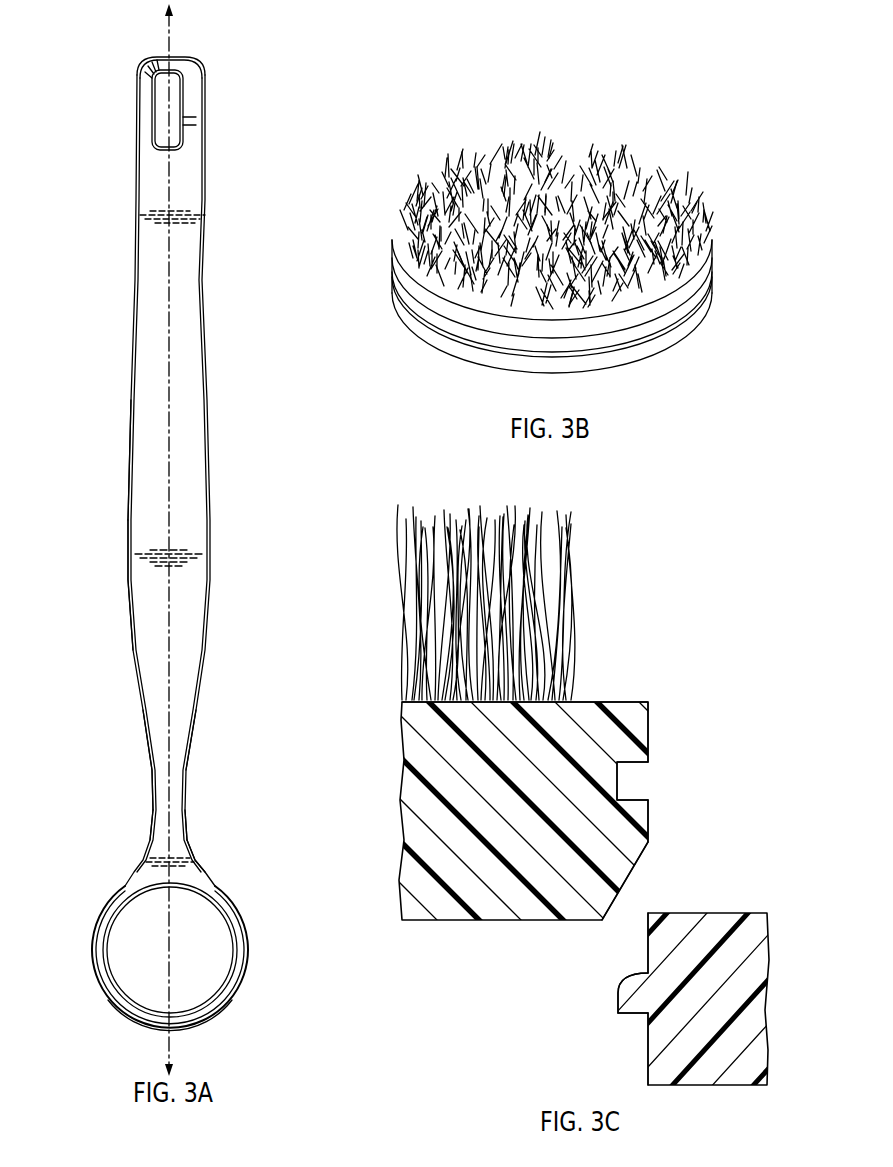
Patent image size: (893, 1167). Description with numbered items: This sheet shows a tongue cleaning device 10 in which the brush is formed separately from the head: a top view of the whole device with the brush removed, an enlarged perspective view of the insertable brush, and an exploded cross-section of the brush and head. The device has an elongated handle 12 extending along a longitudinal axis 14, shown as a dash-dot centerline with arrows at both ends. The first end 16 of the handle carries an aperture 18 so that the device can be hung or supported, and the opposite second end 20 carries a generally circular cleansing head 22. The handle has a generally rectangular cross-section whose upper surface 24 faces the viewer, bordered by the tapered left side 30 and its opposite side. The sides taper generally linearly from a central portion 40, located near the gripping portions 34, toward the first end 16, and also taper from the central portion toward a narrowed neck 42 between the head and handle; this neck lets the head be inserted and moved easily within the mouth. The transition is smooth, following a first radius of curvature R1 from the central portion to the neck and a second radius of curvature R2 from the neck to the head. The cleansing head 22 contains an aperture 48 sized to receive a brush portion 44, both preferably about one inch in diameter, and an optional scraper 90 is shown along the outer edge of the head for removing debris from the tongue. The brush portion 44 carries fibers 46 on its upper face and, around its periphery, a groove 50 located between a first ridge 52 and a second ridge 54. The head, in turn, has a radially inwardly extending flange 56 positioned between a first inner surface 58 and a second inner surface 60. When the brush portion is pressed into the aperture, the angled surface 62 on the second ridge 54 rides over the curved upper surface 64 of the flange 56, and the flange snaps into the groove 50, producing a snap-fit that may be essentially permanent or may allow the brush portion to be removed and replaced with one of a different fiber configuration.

In FIG. 3A, the tongue cleaning device 10 is at (250, 418).
In FIG. 3A, the elongated handle 12 is at (147, 290).
In FIG. 3A, the longitudinal axis 14 is at (165, 32).
In FIG. 3A, the first end 16 is at (128, 108).
In FIG. 3A, the aperture 18 is at (172, 108).
In FIG. 3A, the second end 20 is at (120, 716).
In FIG. 3A, the cleansing head 22 is at (252, 956).
In FIG. 3C, the cleansing head 22 is at (723, 924).
In FIG. 3A, the upper surface 24 is at (203, 330).
In FIG. 3A, the left side 30 is at (130, 398).
In FIG. 3A, the gripping portions 34 is at (226, 545).
In FIG. 3A, the central portion 40 is at (108, 556).
In FIG. 3A, the neck 42 is at (184, 780).
In FIG. 3B, the brush portion 44 is at (544, 255).
In FIG. 3B, the fibers 46 is at (488, 168).
In FIG. 3C, the fibers 46 is at (558, 587).
In FIG. 3A, the aperture 48 is at (122, 940).
In FIG. 3B, the groove 50 is at (705, 297).
In FIG. 3C, the groove 50 is at (642, 781).
In FIG. 3B, the first ridge 52 is at (713, 268).
In FIG. 3C, the first ridge 52 is at (648, 732).
In FIG. 3B, the second ridge 54 is at (673, 325).
In FIG. 3C, the second ridge 54 is at (648, 818).
In FIG. 3C, the radially inwardly extending flange 56 is at (640, 1014).
In FIG. 3C, the first inner surface 58 is at (647, 960).
In FIG. 3C, the second inner surface 60 is at (647, 1052).
In FIG. 3C, the angled surface 62 is at (630, 880).
In FIG. 3C, the curved upper surface 64 is at (618, 996).
In FIG. 3A, the scraper 90 is at (220, 1014).
In FIG. 3A, the first radius of curvature R1 is at (197, 686).
In FIG. 3A, the second radius of curvature R2 is at (198, 853).